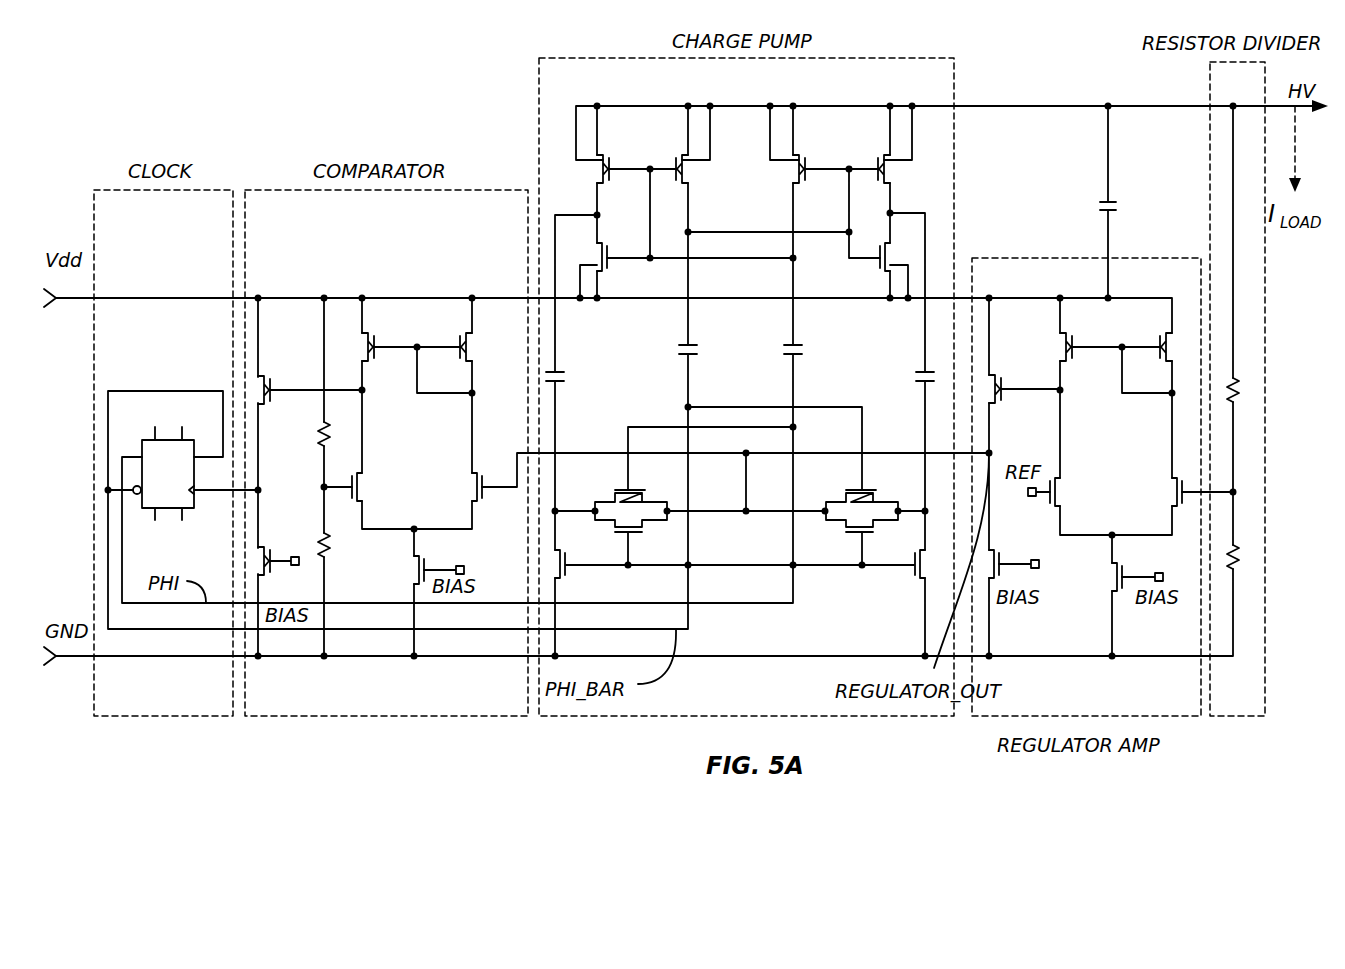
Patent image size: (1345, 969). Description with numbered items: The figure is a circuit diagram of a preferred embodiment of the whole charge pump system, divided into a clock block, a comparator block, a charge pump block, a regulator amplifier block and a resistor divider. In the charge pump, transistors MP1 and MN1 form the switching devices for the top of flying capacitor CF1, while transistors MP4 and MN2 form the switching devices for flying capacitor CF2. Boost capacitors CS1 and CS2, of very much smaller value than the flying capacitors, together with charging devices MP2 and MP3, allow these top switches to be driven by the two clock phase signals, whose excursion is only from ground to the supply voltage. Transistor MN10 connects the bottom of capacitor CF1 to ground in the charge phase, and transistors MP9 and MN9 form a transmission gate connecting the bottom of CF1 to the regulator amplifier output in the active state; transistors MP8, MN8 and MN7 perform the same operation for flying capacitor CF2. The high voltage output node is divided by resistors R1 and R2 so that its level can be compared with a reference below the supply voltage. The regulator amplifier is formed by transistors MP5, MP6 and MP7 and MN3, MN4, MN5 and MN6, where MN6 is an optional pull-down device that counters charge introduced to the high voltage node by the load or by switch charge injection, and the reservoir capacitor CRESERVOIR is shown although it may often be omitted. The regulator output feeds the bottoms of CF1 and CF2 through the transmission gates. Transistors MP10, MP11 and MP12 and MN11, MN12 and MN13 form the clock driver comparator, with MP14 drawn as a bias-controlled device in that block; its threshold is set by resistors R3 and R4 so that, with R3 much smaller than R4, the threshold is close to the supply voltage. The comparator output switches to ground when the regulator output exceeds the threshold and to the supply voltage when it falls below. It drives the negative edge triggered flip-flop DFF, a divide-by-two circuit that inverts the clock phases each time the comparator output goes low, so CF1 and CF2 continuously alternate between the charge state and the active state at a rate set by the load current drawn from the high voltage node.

The D-type flip-flop DFF is at (163, 473).
The transistor MP12 is at (286, 377).
The transistor MP14 is at (286, 574).
The resistor R3 is at (309, 434).
The resistor R4 is at (339, 545).
The transistor MP11 is at (356, 313).
The transistor MP10 is at (467, 313).
The transistor MN12 is at (388, 476).
The transistor MN11 is at (500, 501).
The transistor MN13 is at (443, 558).
The transistor MP1 is at (618, 158).
The charging device MP2 is at (705, 173).
The charging device MP3 is at (816, 186).
The transistor MP4 is at (910, 177).
The transistor MN1 is at (620, 246).
The transistor MN2 is at (863, 270).
The flying capacitor CF1 is at (572, 364).
The flying capacitor CF2 is at (909, 364).
The boost capacitor CS1 is at (706, 341).
The boost capacitor CS2 is at (810, 341).
The transistor MP9 is at (635, 496).
The transistor MN9 is at (647, 542).
The transistor MP8 is at (866, 496).
The transistor MN8 is at (835, 531).
The transistor MN10 is at (584, 576).
The transistor MN7 is at (898, 579).
The reservoir capacitor CRESERVOIR is at (1038, 211).
The transistor MP7 is at (1012, 376).
The transistor MN6 is at (1014, 553).
The transistor MP6 is at (1082, 335).
The transistor MP5 is at (1148, 335).
The transistor MN4 is at (1079, 483).
The transistor MN3 is at (1153, 483).
The transistor MN5 is at (1137, 563).
The resistor R1 is at (1246, 374).
The resistor R2 is at (1246, 541).